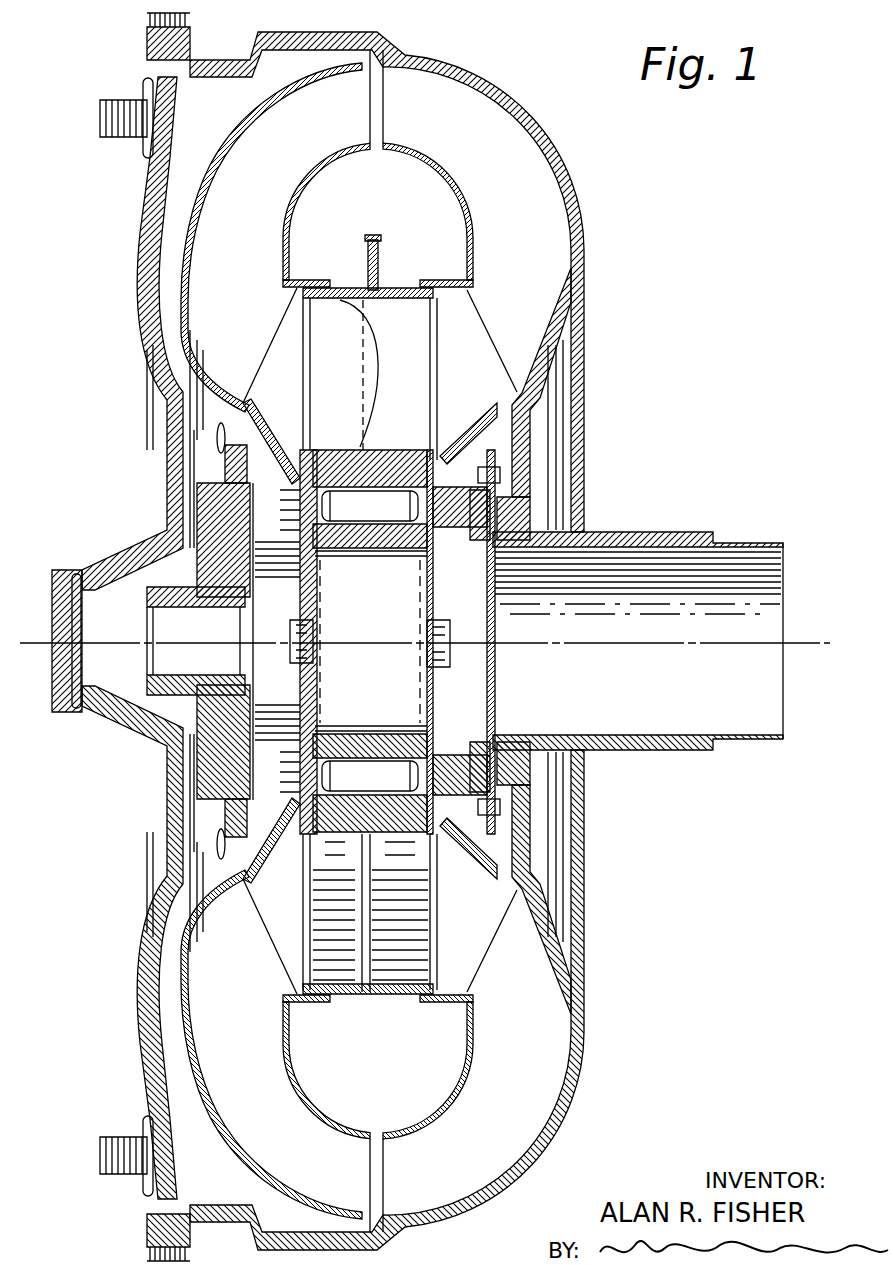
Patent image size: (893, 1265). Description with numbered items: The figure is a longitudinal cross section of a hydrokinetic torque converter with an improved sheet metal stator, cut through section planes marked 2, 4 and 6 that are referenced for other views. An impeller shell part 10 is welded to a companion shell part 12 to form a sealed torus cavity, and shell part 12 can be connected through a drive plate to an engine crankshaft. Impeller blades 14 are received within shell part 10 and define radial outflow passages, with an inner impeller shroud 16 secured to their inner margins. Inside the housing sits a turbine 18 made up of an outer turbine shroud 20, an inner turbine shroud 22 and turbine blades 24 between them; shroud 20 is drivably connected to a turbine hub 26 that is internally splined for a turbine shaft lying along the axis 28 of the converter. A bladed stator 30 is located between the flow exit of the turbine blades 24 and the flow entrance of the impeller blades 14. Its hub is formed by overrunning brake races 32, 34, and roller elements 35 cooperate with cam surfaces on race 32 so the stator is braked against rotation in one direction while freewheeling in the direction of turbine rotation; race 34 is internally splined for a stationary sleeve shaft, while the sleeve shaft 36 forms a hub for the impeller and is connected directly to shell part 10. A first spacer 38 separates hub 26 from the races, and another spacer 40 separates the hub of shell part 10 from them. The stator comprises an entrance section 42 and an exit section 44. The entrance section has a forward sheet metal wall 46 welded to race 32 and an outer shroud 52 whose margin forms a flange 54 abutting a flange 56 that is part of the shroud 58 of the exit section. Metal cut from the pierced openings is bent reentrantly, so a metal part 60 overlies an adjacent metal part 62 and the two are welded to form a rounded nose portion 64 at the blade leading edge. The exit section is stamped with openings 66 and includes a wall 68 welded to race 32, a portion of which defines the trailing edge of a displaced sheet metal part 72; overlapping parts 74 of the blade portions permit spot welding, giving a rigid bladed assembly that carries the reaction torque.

The impeller shell part 10 is at (472, 78).
The companion shell part 12 is at (157, 183).
The impeller blades 14 is at (540, 180).
The inner impeller shroud 16 is at (447, 167).
The turbine 18 is at (208, 230).
The outer turbine shroud 20 is at (173, 259).
The inner turbine shroud 22 is at (298, 195).
The turbine blades 24 is at (213, 290).
The turbine hub 26 is at (220, 530).
The axis 28 is at (805, 643).
The bladed stator 30 is at (450, 367).
The overrunning brake race 32 is at (420, 450).
The overrunning brake race 34 is at (397, 540).
The overrunning brake roller elements 35 is at (340, 556).
The sleeve shaft 36 is at (687, 533).
The first spacer 38 is at (165, 456).
The spacer 40 is at (548, 447).
The entrance section 42 is at (345, 283).
The exit section 44 is at (396, 285).
The forward sheet metal wall 46 is at (285, 455).
The outer shroud 52 is at (330, 995).
The flange 54 is at (377, 237).
The flange 56 is at (383, 242).
The shroud 58 is at (395, 997).
The metal part 60 is at (290, 297).
The metal part 62 is at (362, 390).
The rounded nose portion 64 is at (297, 345).
The openings 66 is at (468, 293).
The wall 68 is at (470, 507).
The sheet metal part 72 is at (447, 312).
The overlapping parts 74 is at (437, 355).
The section line 2- 2 is at (300, 280).
The section line 4- 4 is at (290, 222).
The section line 6- 6 is at (440, 300).